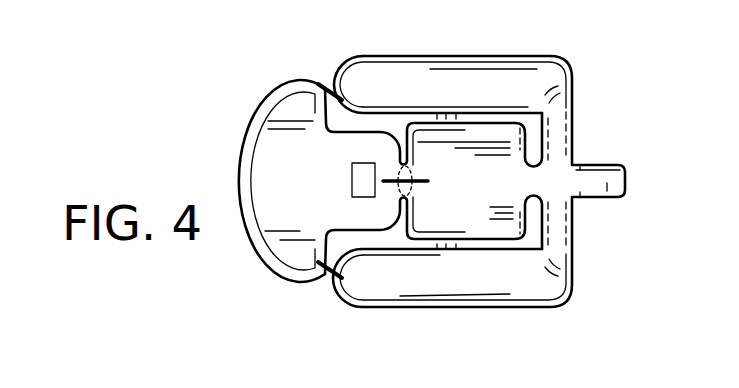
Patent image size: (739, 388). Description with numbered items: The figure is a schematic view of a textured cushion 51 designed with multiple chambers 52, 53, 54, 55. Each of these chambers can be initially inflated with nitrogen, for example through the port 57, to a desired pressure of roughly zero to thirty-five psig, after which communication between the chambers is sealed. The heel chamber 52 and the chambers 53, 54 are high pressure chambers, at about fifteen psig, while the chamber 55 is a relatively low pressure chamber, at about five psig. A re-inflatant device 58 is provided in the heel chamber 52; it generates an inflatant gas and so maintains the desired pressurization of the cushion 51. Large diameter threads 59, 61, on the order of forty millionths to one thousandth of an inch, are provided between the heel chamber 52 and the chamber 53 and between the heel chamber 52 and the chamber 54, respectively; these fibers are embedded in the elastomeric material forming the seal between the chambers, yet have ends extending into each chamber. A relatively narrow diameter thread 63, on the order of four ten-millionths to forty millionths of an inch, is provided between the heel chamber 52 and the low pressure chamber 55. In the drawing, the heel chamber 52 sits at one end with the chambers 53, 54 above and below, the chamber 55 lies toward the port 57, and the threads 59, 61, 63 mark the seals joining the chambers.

The cushion 51 is at (541, 55).
The heel chamber 52 is at (312, 184).
The chamber 53 is at (440, 97).
The chamber 54 is at (440, 291).
The chamber 55 is at (482, 194).
The port 57 is at (607, 186).
The re-inflatant device 58 is at (358, 187).
The large diameter thread 59 is at (327, 84).
The large diameter thread 61 is at (326, 279).
The narrow diameter thread 63 is at (423, 187).